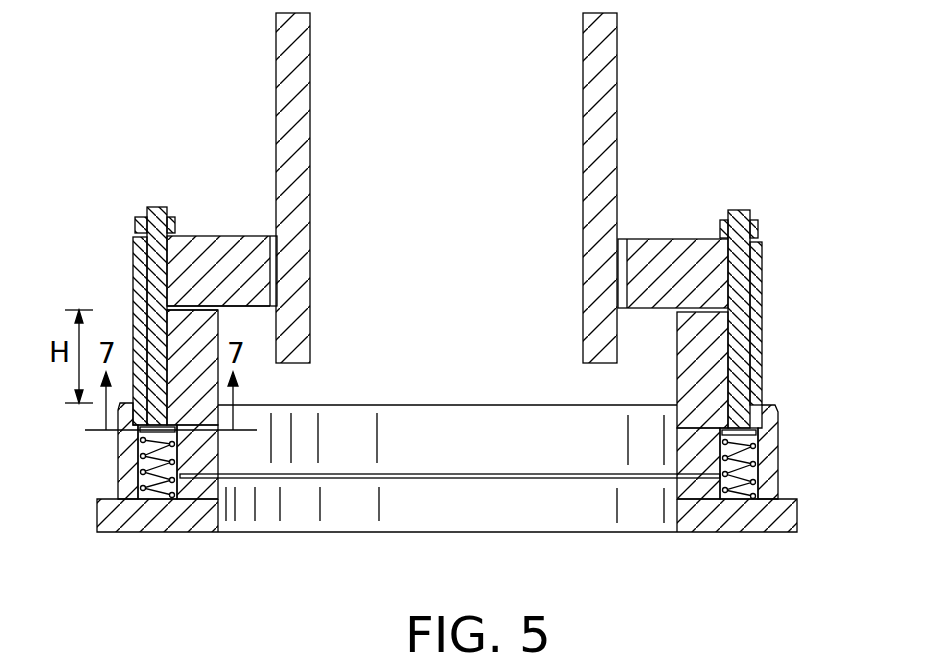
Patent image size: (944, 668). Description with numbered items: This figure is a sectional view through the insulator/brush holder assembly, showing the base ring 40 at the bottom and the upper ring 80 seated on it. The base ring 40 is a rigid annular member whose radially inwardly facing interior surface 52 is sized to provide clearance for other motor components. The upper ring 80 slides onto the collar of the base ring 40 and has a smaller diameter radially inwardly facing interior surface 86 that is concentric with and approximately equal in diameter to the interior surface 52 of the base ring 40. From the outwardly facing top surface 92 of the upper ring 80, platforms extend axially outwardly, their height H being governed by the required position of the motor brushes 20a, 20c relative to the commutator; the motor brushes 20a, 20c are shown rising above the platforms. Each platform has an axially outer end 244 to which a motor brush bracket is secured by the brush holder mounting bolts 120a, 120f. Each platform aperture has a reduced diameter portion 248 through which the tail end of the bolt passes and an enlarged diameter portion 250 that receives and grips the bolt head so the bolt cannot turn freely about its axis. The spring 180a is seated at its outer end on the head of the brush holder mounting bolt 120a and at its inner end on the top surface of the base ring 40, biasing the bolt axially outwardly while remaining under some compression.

The motor brush 20c is at (310, 133).
The motor brush 20a is at (582, 138).
The outwardly facing top surface 92 is at (676, 239).
The brush holder mounting bolt 120f is at (157, 252).
The brush holder mounting bolt 120a is at (740, 280).
The axially outer end of platform 244 is at (193, 307).
The upper ring 80 is at (710, 352).
The reduced diameter portion 248 is at (752, 393).
The enlarged diameter portion 250 is at (758, 463).
The spring 180a is at (760, 478).
The radially inwardly facing interior surface 86 is at (473, 423).
The radially inwardly facing interior surface 52 is at (583, 510).
The base ring 40 is at (723, 520).